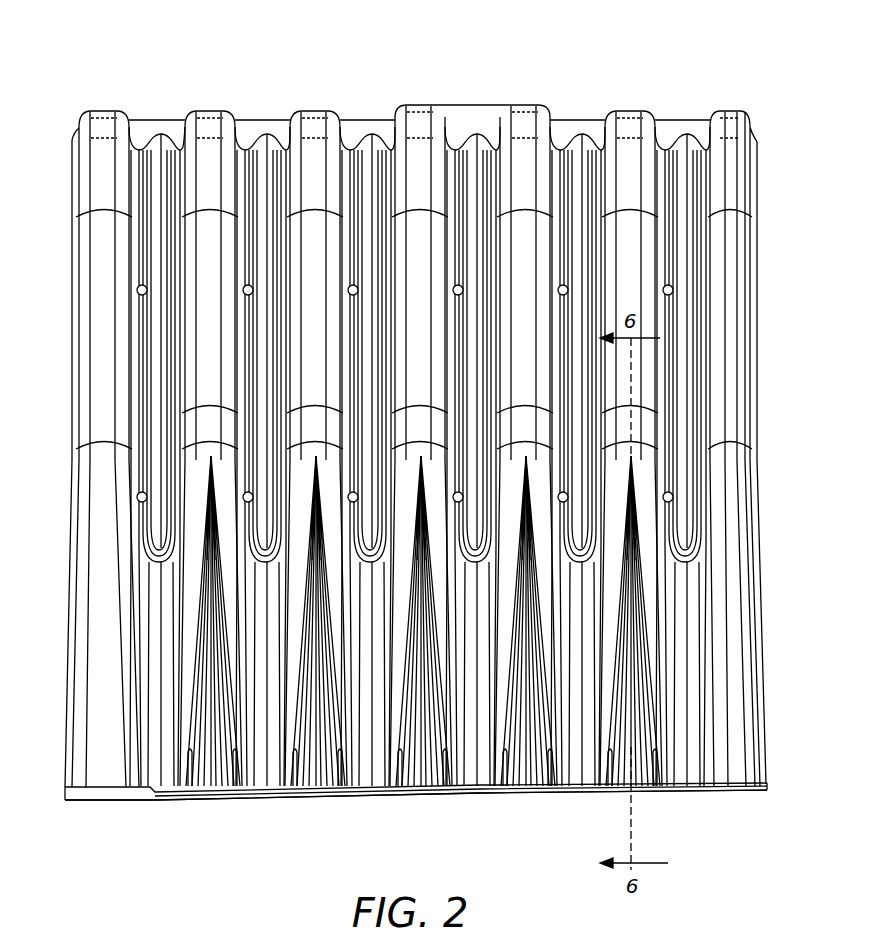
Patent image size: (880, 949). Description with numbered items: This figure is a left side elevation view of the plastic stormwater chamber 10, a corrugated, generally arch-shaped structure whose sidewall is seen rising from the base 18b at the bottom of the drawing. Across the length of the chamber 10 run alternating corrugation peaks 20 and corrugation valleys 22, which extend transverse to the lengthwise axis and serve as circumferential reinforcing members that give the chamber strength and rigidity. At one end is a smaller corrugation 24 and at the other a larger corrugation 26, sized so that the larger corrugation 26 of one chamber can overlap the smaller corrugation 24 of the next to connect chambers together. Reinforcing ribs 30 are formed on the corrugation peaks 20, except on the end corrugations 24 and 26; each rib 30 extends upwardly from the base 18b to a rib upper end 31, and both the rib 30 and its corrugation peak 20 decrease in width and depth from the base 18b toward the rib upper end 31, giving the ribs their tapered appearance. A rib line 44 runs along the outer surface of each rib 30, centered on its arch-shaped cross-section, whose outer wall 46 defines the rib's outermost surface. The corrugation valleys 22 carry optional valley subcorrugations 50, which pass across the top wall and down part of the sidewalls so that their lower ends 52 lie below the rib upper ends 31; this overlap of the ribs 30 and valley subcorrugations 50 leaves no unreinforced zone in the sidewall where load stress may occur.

The stormwater chamber 10 is at (522, 103).
The base 18b is at (767, 786).
The corrugation peaks 20 is at (310, 110).
The corrugation valleys 22 is at (382, 146).
The smaller corrugation 24 is at (730, 113).
The larger corrugation 26 is at (86, 118).
The reinforcing ribs 30 is at (202, 768).
The rib upper end 31 is at (211, 457).
The rib line 44 is at (317, 770).
The outer wall 46 is at (220, 772).
The valley subcorrugations 50 is at (158, 133).
The lower ends 52 is at (158, 545).